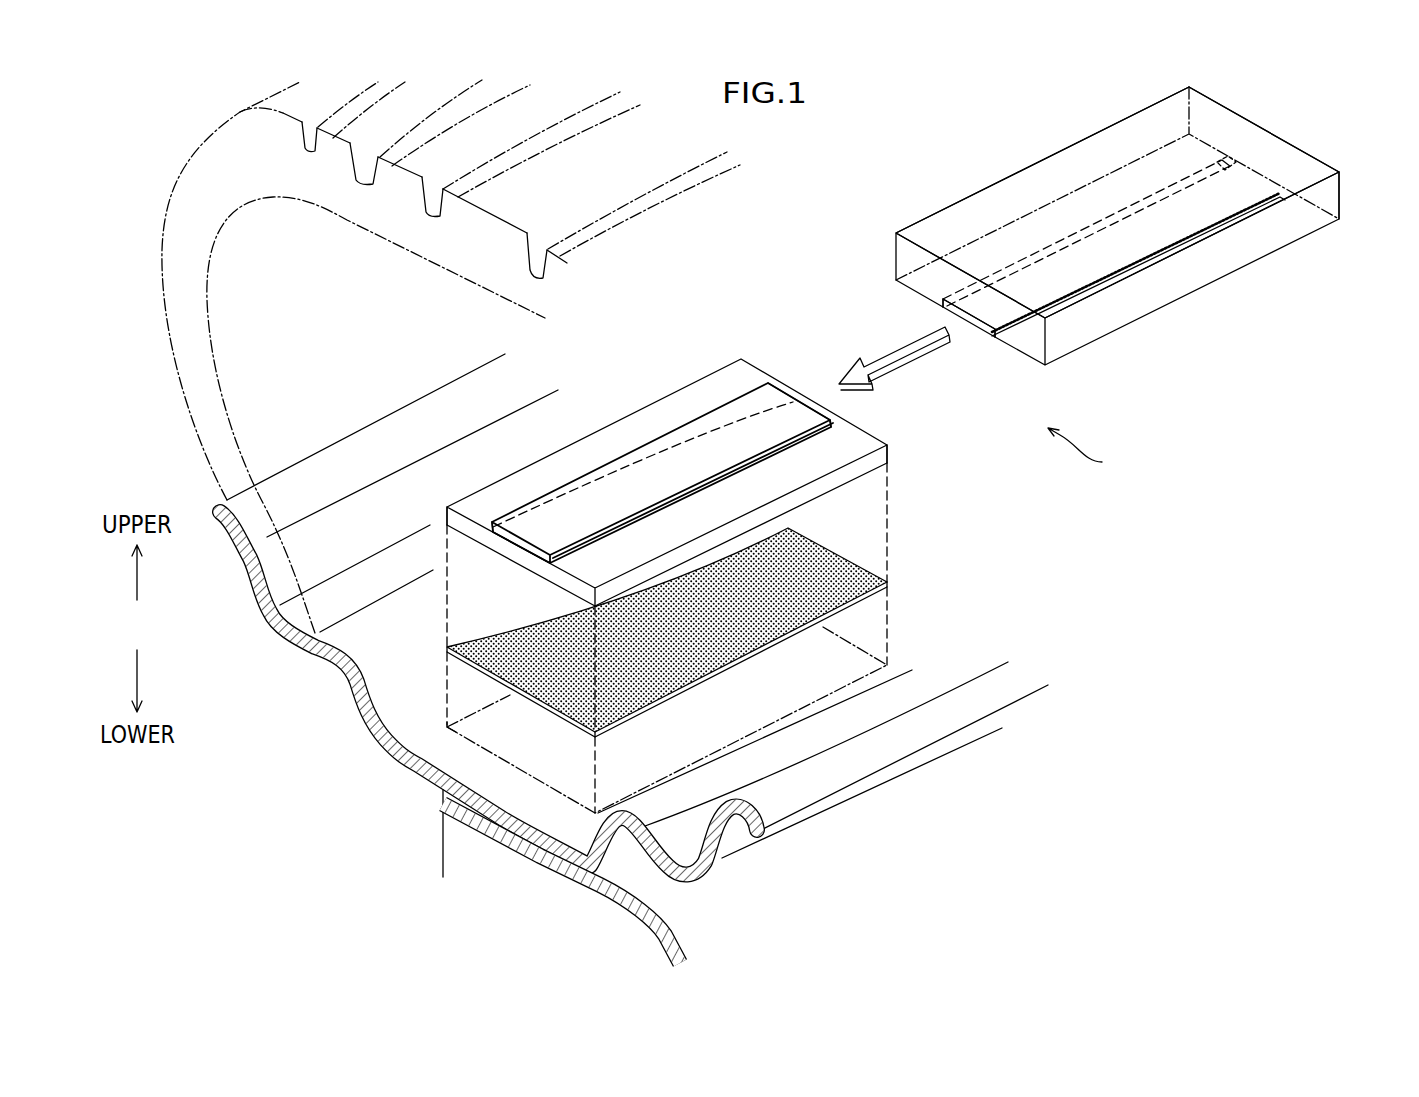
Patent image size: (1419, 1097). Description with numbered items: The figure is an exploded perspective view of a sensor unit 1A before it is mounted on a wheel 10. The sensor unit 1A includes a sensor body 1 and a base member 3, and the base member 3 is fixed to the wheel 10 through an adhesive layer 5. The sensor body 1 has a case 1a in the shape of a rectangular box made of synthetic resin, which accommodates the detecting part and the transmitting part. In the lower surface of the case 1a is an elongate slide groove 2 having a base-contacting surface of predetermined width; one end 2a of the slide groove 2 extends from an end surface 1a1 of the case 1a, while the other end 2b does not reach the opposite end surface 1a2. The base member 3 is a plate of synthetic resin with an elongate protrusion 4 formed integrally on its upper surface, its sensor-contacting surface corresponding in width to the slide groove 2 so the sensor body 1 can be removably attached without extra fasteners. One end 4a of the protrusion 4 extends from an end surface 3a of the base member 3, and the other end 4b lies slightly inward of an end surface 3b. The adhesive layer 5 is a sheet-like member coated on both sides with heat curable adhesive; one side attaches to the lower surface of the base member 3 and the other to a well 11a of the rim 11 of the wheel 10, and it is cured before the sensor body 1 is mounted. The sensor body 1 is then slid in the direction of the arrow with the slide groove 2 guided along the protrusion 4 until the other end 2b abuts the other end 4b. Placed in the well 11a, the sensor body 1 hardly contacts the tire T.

The tire T is at (203, 174).
The sensor body 1 is at (1098, 253).
The case 1a is at (1275, 143).
The end surface of the case 1a1 is at (1033, 333).
The end surface of the case 1a2 is at (1341, 196).
The sensor unit 1A is at (1167, 454).
The slide groove 2 is at (1116, 271).
The one end of the slide groove 2a is at (972, 313).
The other end of the slide groove 2b is at (1246, 173).
The base member 3 is at (665, 440).
The end surface of the base member 3a is at (457, 516).
The end surface of the base member 3b is at (888, 448).
The protrusion 4 is at (655, 446).
The one end of the protrusion 4a is at (523, 532).
The other end of the protrusion 4b is at (800, 395).
The adhesive layer 5 is at (825, 572).
The wheel 10 is at (634, 658).
The rim 11 is at (858, 752).
The well 11a is at (457, 762).